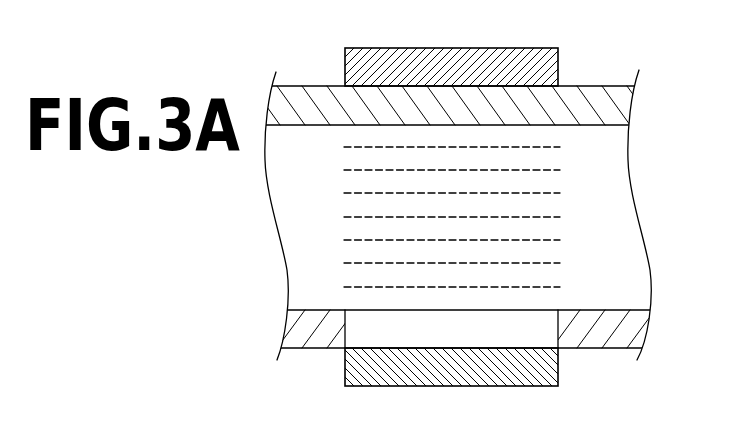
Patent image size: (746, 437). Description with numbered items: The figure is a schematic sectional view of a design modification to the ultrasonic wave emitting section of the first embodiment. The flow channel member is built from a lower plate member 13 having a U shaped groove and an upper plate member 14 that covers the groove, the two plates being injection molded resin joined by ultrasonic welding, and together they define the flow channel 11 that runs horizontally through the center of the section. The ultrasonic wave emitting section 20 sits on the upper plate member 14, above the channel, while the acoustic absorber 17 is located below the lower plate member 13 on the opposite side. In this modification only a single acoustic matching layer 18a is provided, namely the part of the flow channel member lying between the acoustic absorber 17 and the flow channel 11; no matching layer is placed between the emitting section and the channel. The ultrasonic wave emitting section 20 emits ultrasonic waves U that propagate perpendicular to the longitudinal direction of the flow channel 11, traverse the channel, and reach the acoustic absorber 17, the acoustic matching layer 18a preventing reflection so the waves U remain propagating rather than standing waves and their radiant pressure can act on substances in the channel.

The flow channel 11 is at (302, 140).
The lower plate member 13 is at (315, 335).
The upper plate member 14 is at (578, 100).
The acoustic absorber 17 is at (535, 375).
The acoustic matching layer 18a is at (545, 328).
The ultrasonic wave emitting section 20 is at (445, 65).
The ultrasonic waves U is at (530, 170).